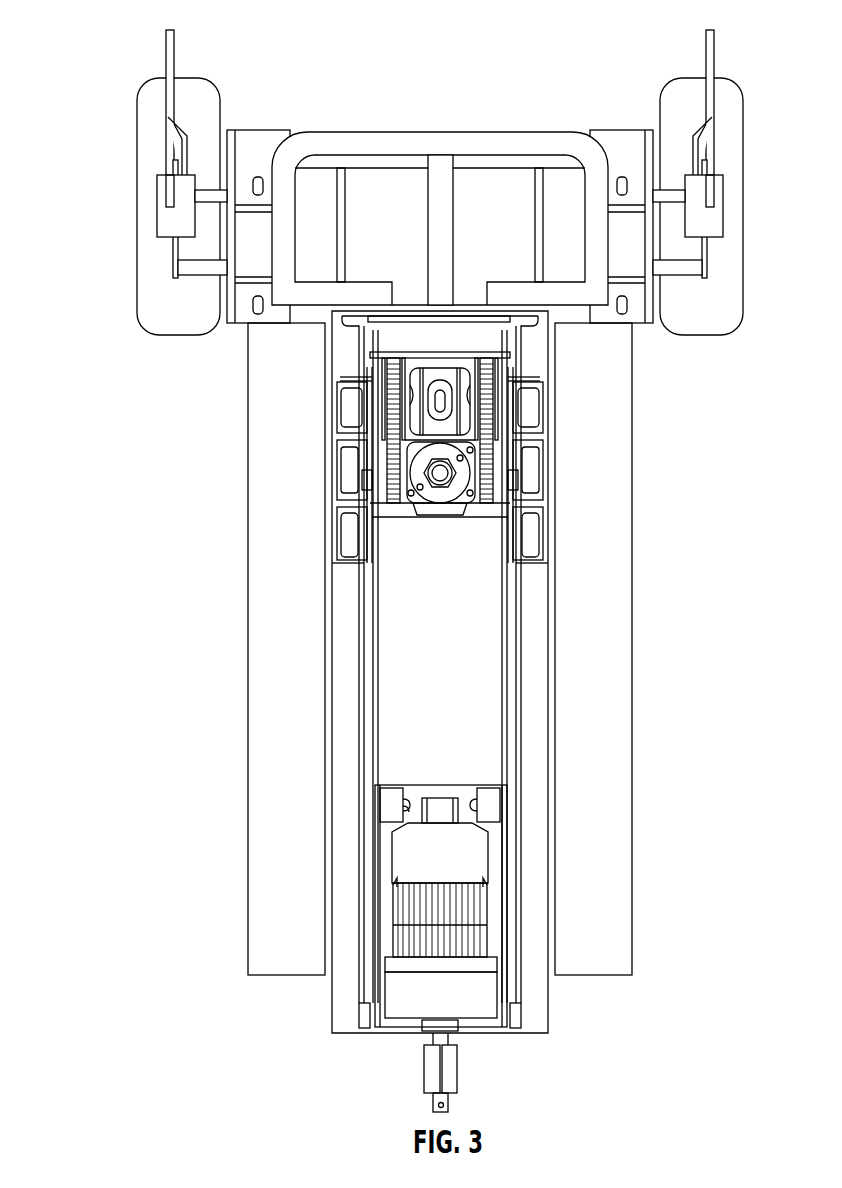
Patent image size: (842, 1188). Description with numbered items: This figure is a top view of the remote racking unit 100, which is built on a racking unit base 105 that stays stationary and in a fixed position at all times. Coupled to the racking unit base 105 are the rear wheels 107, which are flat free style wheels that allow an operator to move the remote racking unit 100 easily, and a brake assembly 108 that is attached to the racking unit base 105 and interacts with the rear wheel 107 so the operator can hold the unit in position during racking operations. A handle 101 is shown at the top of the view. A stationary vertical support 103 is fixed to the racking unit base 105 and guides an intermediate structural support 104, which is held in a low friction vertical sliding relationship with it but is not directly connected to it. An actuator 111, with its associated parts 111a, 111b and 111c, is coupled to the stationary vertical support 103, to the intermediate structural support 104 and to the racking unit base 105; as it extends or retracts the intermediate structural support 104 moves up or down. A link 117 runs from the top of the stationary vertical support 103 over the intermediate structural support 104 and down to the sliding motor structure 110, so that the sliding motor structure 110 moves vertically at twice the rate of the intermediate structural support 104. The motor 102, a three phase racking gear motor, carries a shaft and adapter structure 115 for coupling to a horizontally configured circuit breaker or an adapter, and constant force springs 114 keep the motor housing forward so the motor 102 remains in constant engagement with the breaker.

The remote racking unit 100 is at (105, 86).
The handle 101 is at (341, 134).
The motor 102 is at (406, 858).
The stationary vertical support 103 is at (337, 407).
The intermediate structural support 104 is at (337, 468).
The racking unit base 105 is at (618, 762).
The rear wheel 107 is at (728, 314).
The brake assembly 108 is at (158, 210).
The sliding motor structure 110 is at (337, 533).
The actuator 111 is at (463, 473).
The gear housing mount 111a is at (496, 492).
The latch mechanism 111b is at (482, 437).
The slot 111c is at (453, 417).
The constant force springs 114 is at (390, 806).
The shaft and adapter structure 115 is at (432, 1070).
The link 117 is at (388, 481).